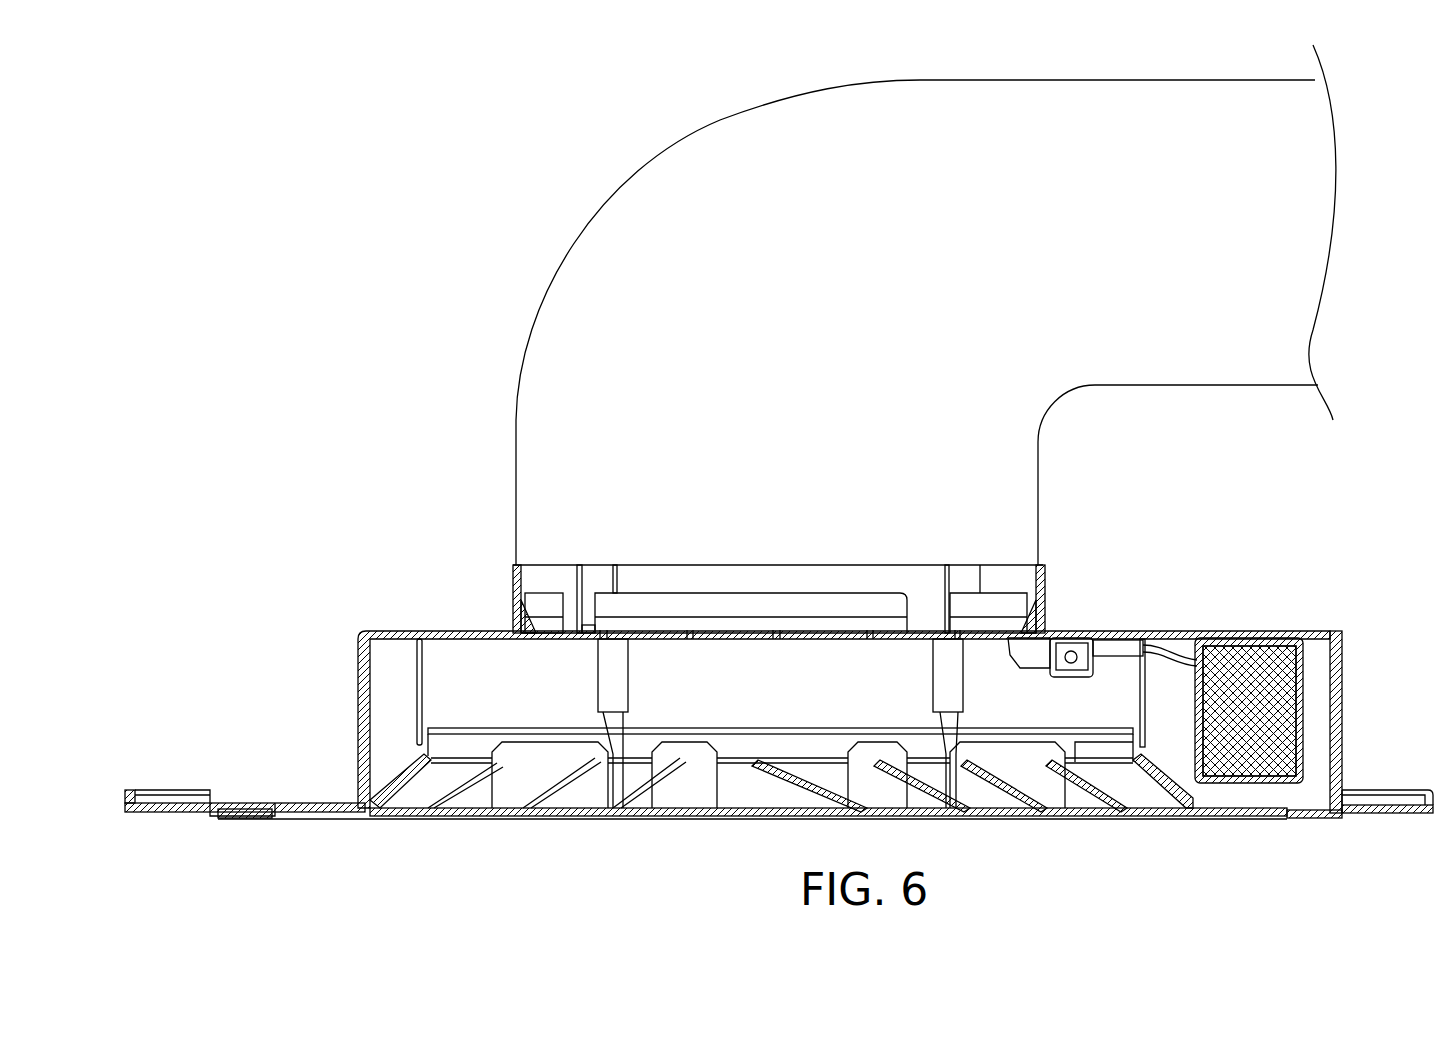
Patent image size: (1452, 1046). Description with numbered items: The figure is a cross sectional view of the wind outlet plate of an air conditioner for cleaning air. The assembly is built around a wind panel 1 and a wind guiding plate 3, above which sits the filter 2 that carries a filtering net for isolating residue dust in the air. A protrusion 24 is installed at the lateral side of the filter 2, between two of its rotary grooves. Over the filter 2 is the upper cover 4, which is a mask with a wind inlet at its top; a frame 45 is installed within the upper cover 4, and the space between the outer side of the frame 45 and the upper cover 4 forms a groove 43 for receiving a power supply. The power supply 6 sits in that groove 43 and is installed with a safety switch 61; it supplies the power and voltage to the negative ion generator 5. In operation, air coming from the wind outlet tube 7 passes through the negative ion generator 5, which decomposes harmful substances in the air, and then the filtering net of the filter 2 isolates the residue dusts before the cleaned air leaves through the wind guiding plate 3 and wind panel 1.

The wind panel 1 is at (238, 817).
The filter 2 is at (542, 598).
The wind guiding plate 3 is at (662, 797).
The upper cover 4 is at (425, 622).
The negative ion generator 5 is at (1065, 718).
The power supply 6 is at (1277, 768).
The wind outlet tube 7 is at (648, 212).
The protrusion 24 is at (1030, 654).
The groove 43 is at (1317, 663).
The frame 45 is at (413, 677).
The safety switch 61 is at (1077, 648).